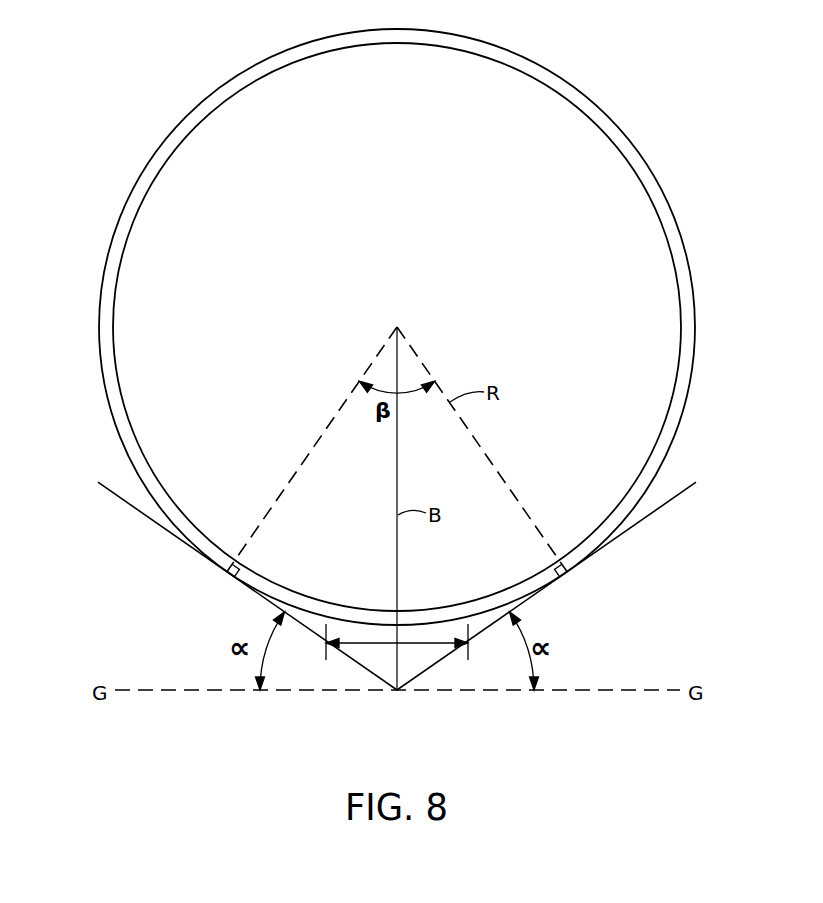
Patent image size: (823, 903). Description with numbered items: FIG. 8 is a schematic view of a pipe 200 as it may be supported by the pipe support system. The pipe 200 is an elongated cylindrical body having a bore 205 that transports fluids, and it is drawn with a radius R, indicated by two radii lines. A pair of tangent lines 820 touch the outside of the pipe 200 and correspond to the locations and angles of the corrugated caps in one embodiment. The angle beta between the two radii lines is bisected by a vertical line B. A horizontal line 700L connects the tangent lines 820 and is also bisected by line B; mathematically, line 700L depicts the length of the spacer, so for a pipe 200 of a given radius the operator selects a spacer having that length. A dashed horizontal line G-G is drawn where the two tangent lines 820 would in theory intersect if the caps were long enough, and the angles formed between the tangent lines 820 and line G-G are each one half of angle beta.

The pipe 200 is at (695, 330).
The bore 205 is at (380, 289).
The tangent lines 820 is at (128, 503).
The horizontal line 700L is at (377, 644).